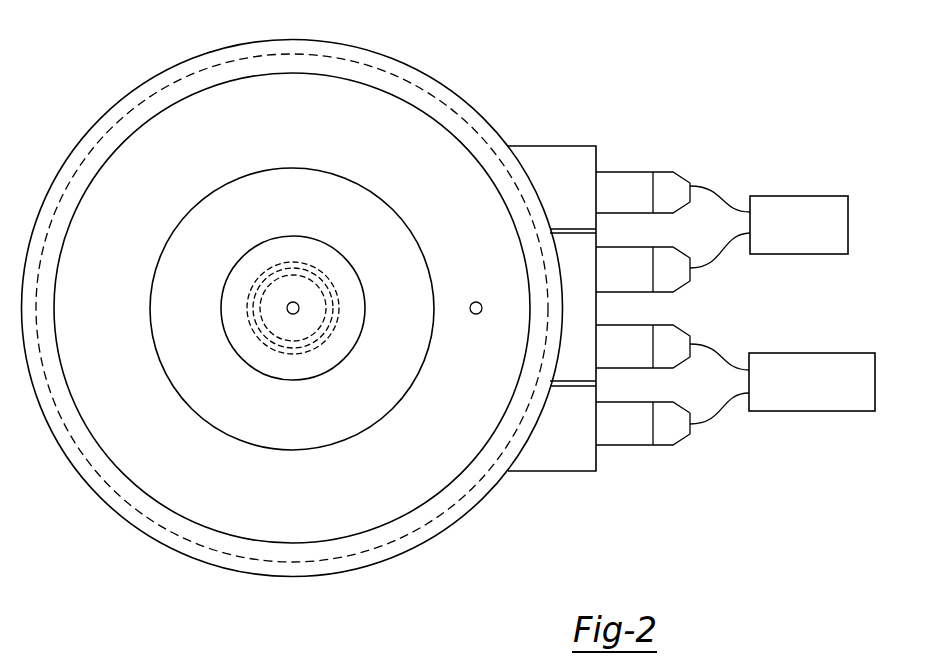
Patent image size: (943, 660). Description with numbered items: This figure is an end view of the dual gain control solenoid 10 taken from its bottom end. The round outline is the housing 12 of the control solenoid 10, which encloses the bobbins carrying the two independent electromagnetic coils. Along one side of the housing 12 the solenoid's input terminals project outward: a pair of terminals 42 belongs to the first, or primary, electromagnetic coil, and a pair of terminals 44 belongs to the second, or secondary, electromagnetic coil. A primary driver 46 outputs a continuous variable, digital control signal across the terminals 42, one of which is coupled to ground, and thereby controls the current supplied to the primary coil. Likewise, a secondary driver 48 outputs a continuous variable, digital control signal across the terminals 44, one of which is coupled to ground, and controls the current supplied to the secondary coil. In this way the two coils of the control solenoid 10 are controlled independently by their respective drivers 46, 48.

The control solenoid 10 is at (565, 85).
The housing 12 is at (136, 514).
The terminals 42 is at (670, 180).
The terminals 44 is at (677, 335).
The primary driver 46 is at (800, 196).
The secondary driver 48 is at (805, 353).